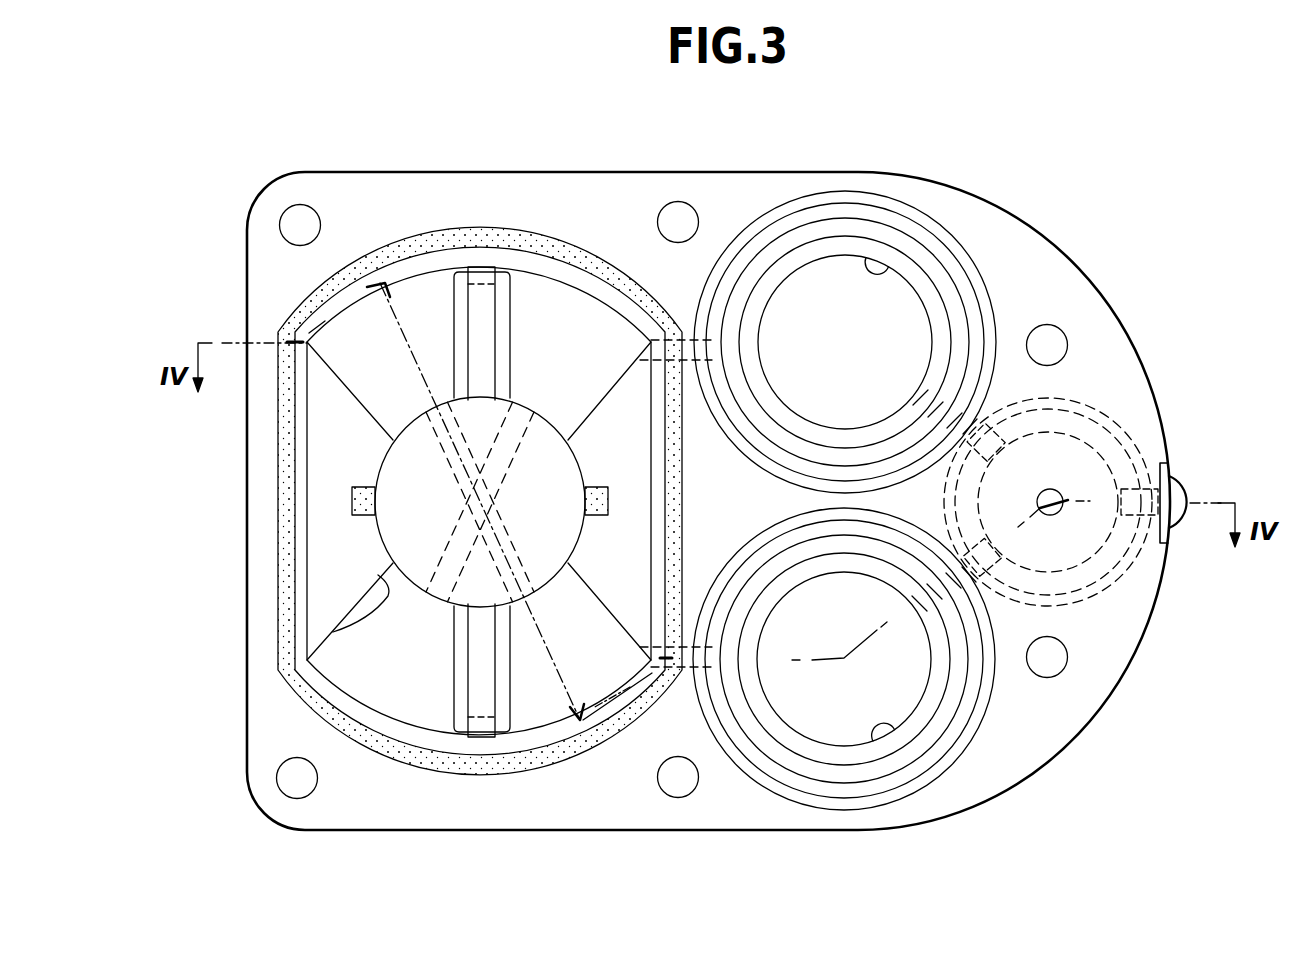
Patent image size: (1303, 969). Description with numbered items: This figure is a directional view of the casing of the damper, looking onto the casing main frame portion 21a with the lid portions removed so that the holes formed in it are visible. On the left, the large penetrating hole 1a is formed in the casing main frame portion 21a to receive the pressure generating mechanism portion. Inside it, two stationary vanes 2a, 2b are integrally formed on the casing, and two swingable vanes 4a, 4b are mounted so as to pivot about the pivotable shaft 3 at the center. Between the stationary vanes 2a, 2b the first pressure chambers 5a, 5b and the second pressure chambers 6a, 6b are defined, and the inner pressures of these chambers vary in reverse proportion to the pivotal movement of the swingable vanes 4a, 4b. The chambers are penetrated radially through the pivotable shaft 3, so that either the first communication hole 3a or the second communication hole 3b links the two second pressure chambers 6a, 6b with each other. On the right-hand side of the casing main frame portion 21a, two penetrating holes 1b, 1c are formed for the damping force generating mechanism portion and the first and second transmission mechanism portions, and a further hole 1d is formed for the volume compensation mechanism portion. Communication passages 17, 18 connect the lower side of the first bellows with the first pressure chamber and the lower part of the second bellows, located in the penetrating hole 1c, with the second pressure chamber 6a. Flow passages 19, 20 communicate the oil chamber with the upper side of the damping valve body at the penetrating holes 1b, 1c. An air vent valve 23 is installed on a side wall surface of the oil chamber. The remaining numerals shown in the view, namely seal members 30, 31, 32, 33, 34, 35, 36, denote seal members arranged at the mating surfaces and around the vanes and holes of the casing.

The penetrating hole 1a is at (435, 273).
The penetrating hole 1b is at (897, 728).
The penetrating hole 1c is at (882, 270).
The hole 1d is at (1108, 447).
The stationary vane 2a is at (333, 632).
The stationary vane 2b is at (585, 565).
The pivotable shaft 3 is at (393, 535).
The first communication hole 3a is at (427, 403).
The second communication hole 3b is at (437, 600).
The swingable vane 4a is at (454, 720).
The swingable vane 4b is at (515, 290).
The first pressure chamber 5a is at (538, 705).
The first pressure chamber 5b is at (360, 310).
The second pressure chamber 6a is at (585, 295).
The second pressure chamber 6b is at (388, 703).
The communication passage 17 is at (686, 667).
The communication passage 18 is at (690, 330).
The flow passage 19 is at (997, 550).
The flow passage 20 is at (1000, 460).
The casing main frame portion 21a is at (1052, 236).
The air vent valve 23 is at (1186, 495).
The seal member 30 is at (312, 297).
The seal member 31 is at (878, 810).
The seal member 32 is at (837, 190).
The seal member 33 is at (481, 738).
The seal member 34 is at (481, 266).
The seal member 35 is at (352, 502).
The seal member 36 is at (609, 501).